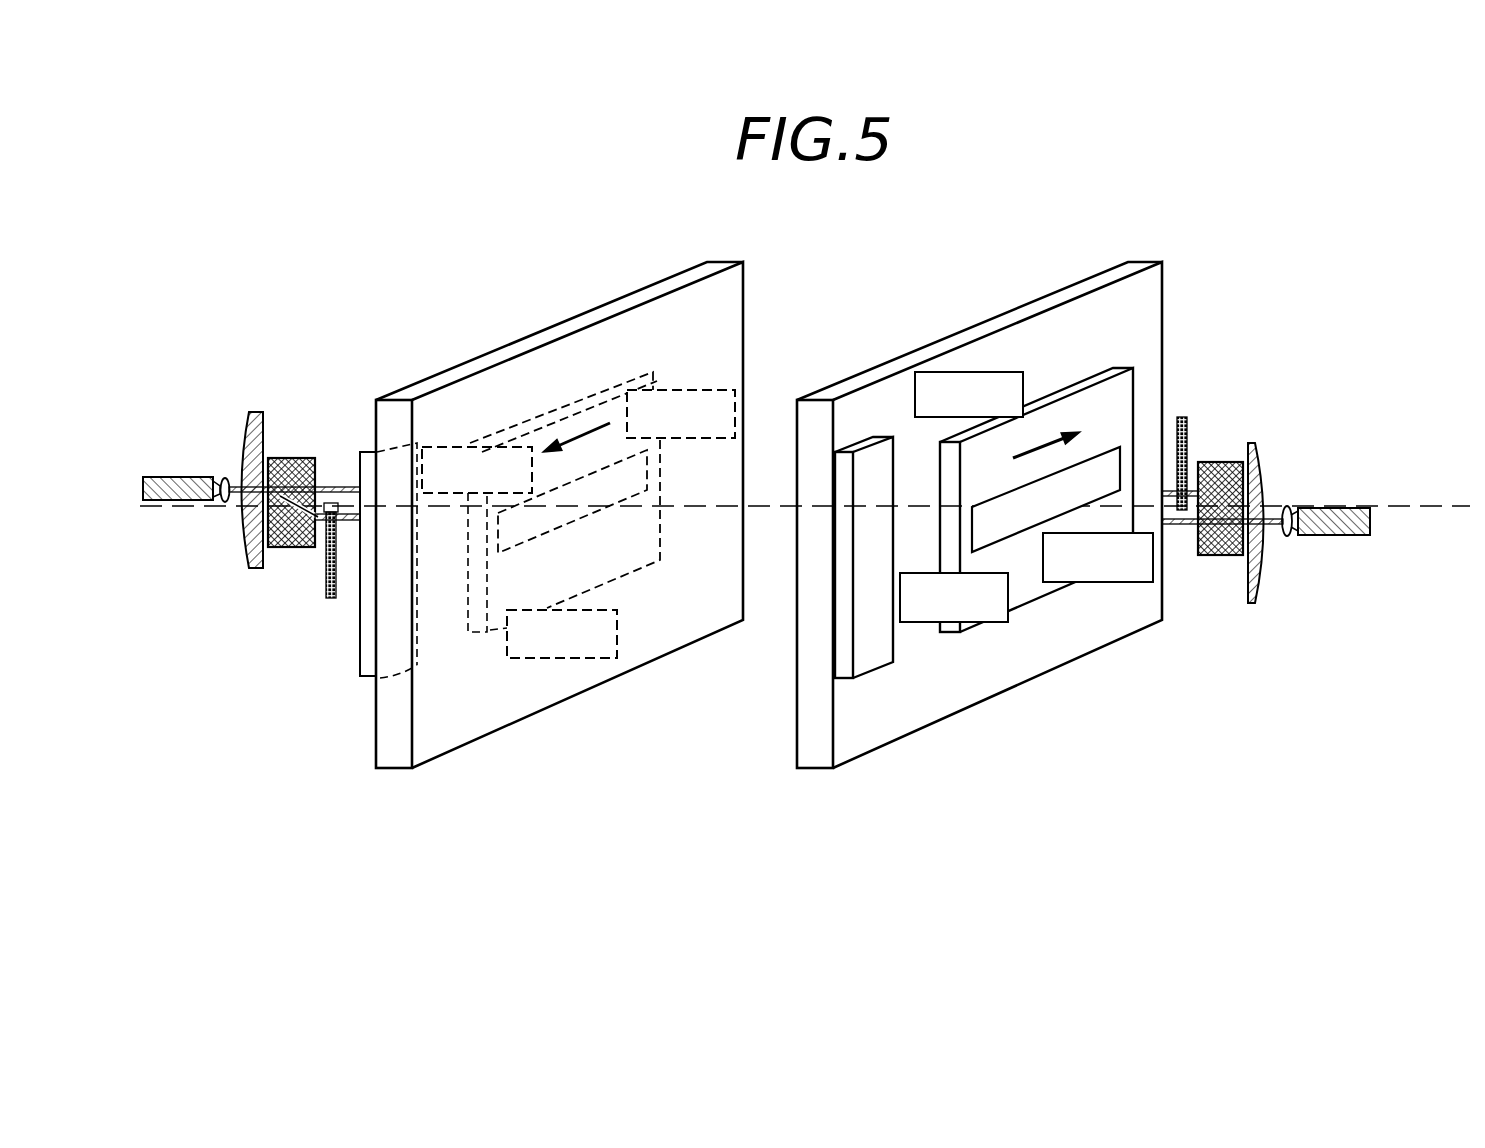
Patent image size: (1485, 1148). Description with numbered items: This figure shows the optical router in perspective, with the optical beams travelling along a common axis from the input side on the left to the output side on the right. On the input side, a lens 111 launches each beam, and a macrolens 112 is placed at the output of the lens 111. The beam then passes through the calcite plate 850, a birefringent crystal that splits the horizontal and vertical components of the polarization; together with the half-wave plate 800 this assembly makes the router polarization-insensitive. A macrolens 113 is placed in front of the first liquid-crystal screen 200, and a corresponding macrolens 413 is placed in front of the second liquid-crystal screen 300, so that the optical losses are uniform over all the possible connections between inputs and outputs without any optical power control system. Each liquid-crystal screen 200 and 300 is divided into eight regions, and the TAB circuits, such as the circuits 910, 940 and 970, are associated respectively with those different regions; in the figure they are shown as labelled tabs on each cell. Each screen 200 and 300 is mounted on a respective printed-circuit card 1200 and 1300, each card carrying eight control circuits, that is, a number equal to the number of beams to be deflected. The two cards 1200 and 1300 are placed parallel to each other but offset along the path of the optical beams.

The lens 111 is at (170, 498).
The macrolens 112 is at (225, 482).
The macrolens 113 is at (255, 412).
The birefringent crystal (calcite plate) 850 is at (297, 458).
The half-wave plate 800 is at (330, 600).
The TAB circuit 910 is at (435, 447).
The liquid-crystal screen (cell) 200 is at (566, 400).
The TAB circuit 970 is at (693, 387).
The TAB circuit 940 is at (593, 655).
The printed-circuit card 1200 is at (470, 723).
The printed-circuit card 1300 is at (868, 717).
The liquid-crystal screen (cell) 300 is at (1125, 397).
The macrolens 413 is at (1262, 447).